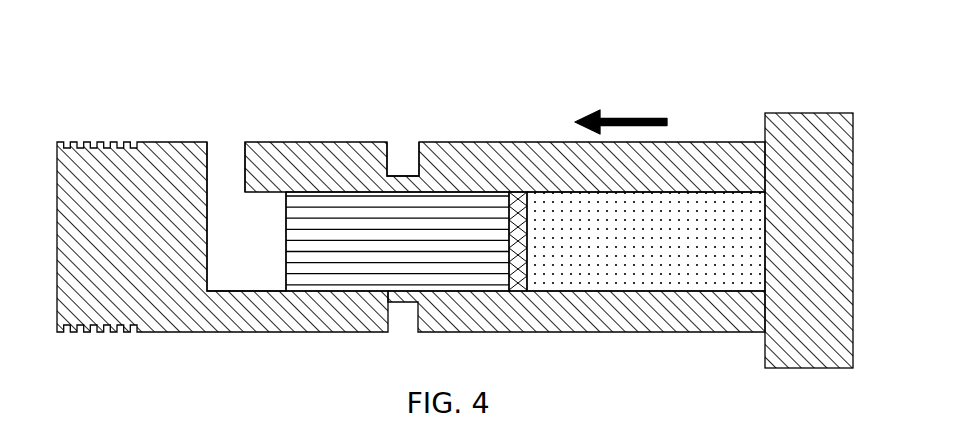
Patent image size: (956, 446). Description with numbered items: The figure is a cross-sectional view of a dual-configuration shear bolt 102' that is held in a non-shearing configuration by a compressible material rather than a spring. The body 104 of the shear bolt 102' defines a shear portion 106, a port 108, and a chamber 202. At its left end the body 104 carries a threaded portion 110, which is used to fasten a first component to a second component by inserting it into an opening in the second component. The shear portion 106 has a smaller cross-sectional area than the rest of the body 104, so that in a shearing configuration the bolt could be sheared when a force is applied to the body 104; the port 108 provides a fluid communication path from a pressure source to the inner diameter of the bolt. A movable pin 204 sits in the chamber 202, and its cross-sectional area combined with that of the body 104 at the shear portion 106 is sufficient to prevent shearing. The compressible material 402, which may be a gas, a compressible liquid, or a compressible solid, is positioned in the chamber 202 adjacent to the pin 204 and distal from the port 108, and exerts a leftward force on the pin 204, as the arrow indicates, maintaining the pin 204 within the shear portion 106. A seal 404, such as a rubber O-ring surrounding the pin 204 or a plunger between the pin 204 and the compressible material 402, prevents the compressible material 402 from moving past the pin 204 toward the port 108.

The dual-configuration shear bolt 102' is at (798, 207).
The body 104 is at (541, 137).
The shear portion 106 is at (403, 159).
The port 108 is at (212, 139).
The threaded portion 110 is at (113, 129).
The chamber 202 is at (224, 277).
The pin 204 is at (271, 221).
The compressible material 402 is at (598, 285).
The seal 404 is at (519, 294).